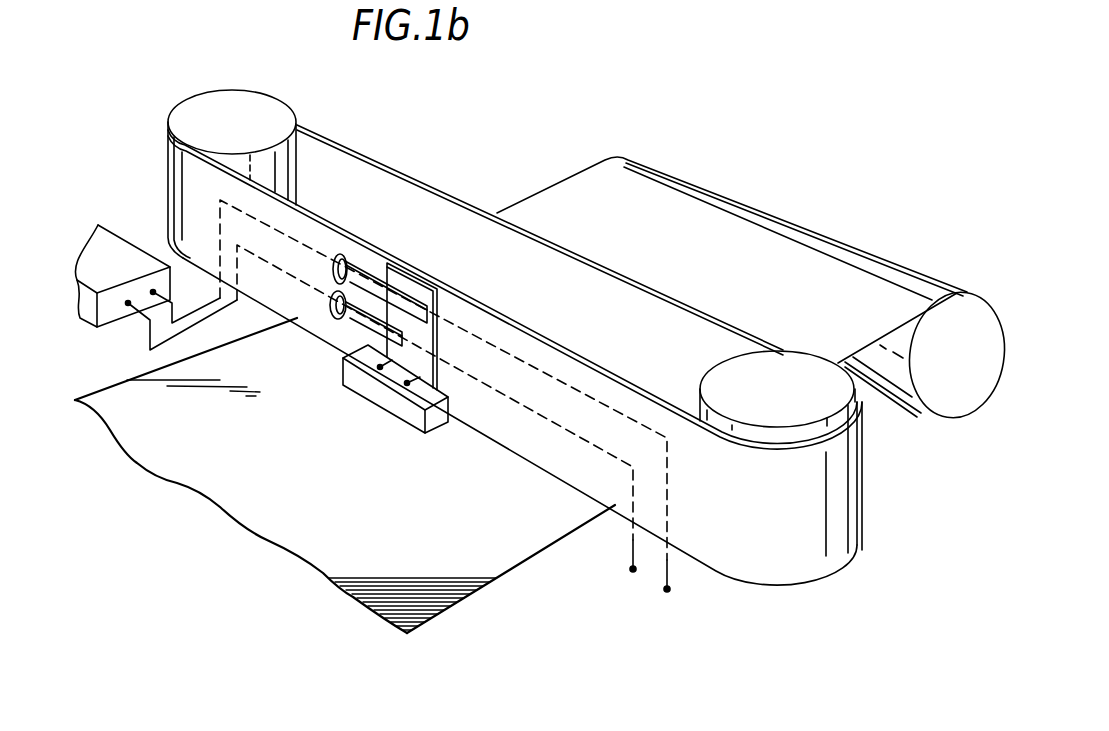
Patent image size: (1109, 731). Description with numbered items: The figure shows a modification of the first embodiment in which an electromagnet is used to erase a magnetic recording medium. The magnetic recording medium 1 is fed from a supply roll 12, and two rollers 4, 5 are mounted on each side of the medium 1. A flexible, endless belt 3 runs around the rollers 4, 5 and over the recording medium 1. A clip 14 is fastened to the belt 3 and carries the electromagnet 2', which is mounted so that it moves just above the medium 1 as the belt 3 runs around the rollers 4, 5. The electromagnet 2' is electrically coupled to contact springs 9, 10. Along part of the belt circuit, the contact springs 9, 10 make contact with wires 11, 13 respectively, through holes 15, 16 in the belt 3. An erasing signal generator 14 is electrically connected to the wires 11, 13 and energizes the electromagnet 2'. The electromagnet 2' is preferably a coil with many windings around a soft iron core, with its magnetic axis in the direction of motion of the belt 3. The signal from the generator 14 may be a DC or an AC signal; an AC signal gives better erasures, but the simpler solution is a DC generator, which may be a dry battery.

The magnetic recording medium 1 is at (760, 240).
The electromagnet 2' is at (395, 410).
The flexible endless belt 3 is at (583, 285).
The roller 4 is at (789, 405).
The roller 5 is at (247, 139).
The contact spring 9 is at (388, 320).
The contact spring 10 is at (363, 282).
The wire 11 is at (338, 321).
The supply roll 12 is at (958, 400).
The wire 13 is at (345, 255).
The clip / erasing signal generator 14 is at (108, 243).
The hole in belt 15 is at (333, 253).
The hole in belt 16 is at (330, 314).